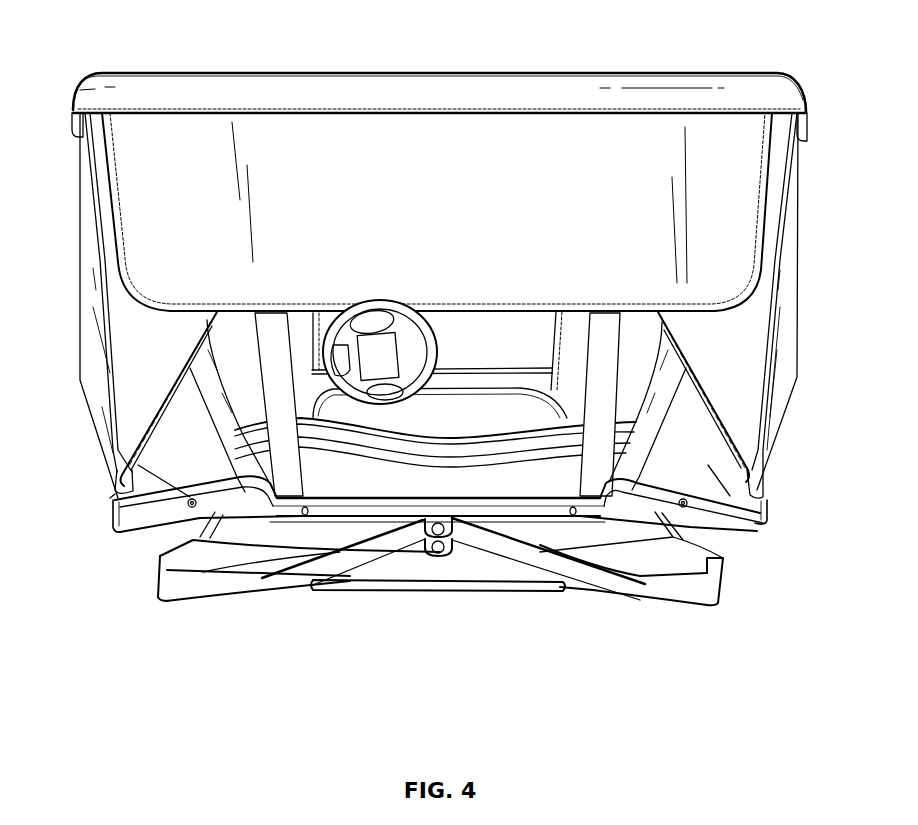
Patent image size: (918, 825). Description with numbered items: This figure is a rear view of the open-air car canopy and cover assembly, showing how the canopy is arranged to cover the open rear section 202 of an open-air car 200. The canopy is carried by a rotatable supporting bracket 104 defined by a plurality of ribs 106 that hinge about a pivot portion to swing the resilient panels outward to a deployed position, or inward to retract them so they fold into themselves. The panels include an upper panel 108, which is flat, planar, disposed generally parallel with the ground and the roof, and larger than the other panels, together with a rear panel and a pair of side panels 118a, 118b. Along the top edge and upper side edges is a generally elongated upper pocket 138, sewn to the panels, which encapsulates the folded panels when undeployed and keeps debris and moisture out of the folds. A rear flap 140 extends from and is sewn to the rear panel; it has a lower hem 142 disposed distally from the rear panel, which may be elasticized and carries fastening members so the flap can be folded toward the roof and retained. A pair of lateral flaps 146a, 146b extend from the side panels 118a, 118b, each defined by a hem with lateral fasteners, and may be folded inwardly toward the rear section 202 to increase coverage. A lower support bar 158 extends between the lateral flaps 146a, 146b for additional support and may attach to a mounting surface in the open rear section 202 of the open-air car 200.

The rotatable supporting bracket 104 is at (245, 350).
The ribs 106 is at (208, 397).
The upper panel 108 is at (71, 137).
The side panel 118a is at (748, 361).
The side panel 118b is at (127, 357).
The upper pocket 138 is at (483, 86).
The rear flap 140 is at (455, 221).
The lower hem 142 is at (210, 317).
The lateral flap 146a is at (767, 512).
The lateral flap 146b is at (113, 509).
The lower support bar 158 is at (383, 505).
The open-air car 200 is at (424, 422).
The open rear section 202 is at (502, 572).